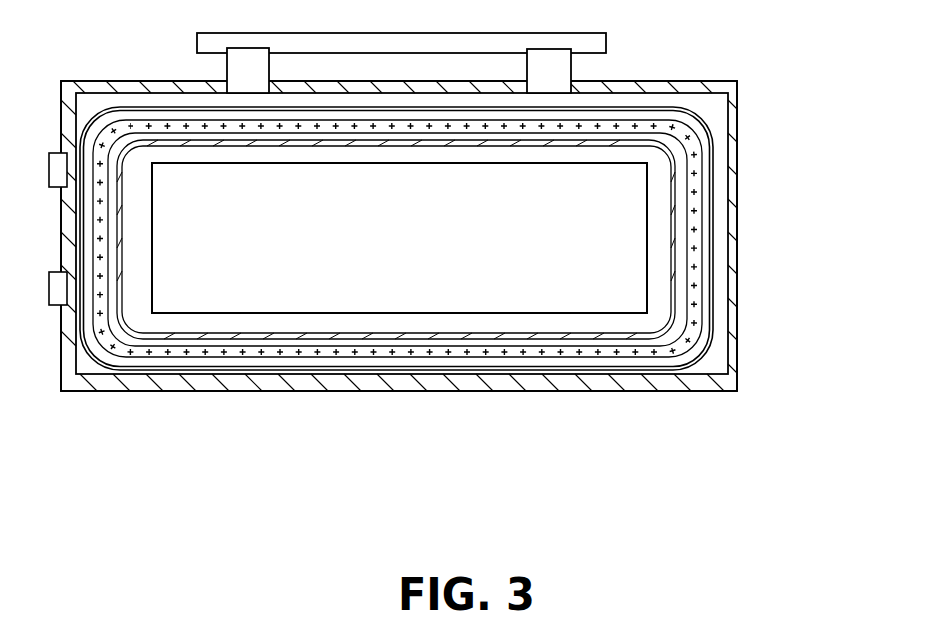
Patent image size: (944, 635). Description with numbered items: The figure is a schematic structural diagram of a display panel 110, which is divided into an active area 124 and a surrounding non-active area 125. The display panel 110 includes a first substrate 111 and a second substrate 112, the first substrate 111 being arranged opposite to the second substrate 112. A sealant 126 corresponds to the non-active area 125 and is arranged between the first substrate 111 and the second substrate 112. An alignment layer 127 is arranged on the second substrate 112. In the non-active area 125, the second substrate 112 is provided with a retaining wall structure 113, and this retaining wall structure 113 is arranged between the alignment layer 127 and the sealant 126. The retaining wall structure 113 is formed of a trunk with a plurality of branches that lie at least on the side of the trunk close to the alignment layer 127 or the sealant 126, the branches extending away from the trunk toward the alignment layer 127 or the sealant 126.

The display panel 110 is at (753, 120).
The first substrate 111 is at (555, 383).
The second substrate 112 is at (715, 360).
The retaining wall structure 113 is at (252, 335).
The active area 124 is at (183, 295).
The non-active area 125 is at (397, 331).
The sealant 126 is at (323, 347).
The alignment layer 127 is at (242, 322).